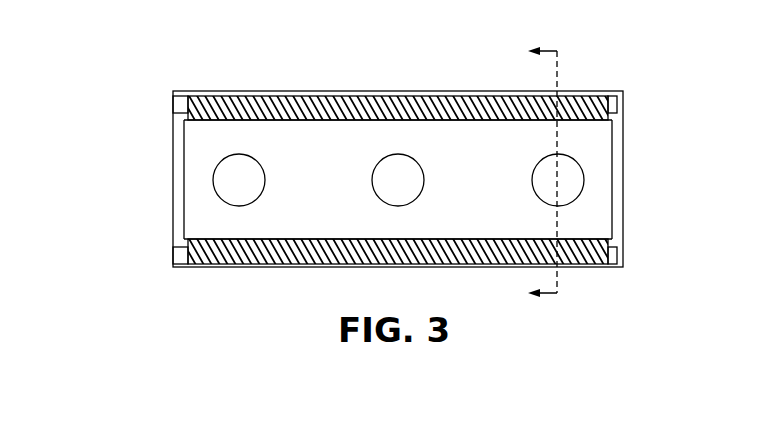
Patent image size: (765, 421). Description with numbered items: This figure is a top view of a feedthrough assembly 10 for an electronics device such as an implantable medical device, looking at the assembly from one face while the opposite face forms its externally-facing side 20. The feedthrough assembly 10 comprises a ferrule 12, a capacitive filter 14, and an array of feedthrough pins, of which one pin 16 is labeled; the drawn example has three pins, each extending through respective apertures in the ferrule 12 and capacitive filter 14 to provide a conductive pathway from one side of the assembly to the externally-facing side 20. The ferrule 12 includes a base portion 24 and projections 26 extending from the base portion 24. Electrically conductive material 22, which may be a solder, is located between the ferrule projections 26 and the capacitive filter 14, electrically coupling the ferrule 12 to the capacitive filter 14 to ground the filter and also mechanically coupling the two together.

The feedthrough assembly 10 is at (122, 129).
The ferrule 12 is at (179, 91).
The capacitive filter 14 is at (600, 157).
The feedthrough pin 16 is at (230, 187).
The externally-facing side 20 is at (384, 57).
The electrically conductive material 22 is at (358, 96).
The base portion 24 is at (617, 227).
The projections 26 is at (596, 91).